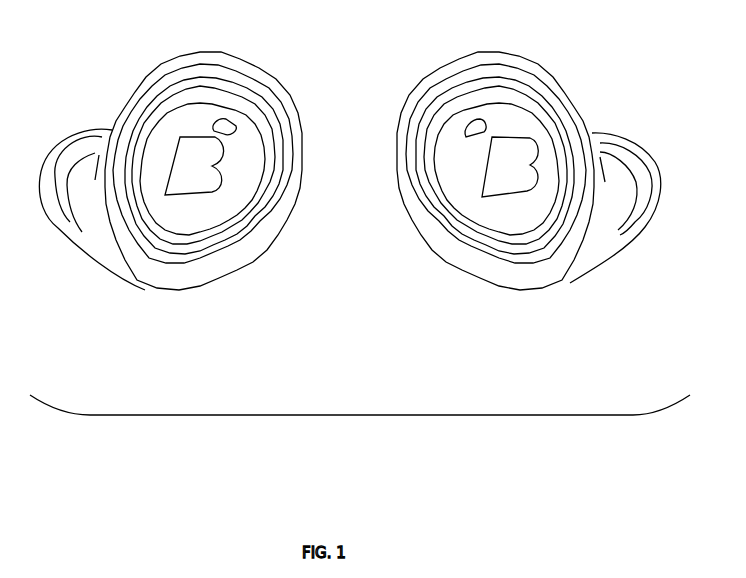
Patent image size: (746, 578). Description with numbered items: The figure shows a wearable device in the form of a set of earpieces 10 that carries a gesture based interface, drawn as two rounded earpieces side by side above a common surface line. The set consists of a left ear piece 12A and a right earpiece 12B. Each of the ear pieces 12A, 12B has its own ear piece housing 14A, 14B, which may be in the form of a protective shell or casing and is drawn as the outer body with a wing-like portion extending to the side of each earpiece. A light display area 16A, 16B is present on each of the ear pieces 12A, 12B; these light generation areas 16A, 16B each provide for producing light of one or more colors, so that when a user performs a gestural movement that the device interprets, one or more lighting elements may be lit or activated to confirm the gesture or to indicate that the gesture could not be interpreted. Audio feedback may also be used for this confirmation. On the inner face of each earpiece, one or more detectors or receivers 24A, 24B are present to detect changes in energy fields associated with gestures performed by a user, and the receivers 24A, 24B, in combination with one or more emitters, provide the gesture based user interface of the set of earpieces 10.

The set of earpieces 10 is at (343, 418).
The left ear piece 12A is at (196, 197).
The right earpiece 12B is at (529, 194).
The ear piece housing 14A is at (226, 268).
The ear piece housing 14B is at (560, 290).
The light display area 16A is at (270, 127).
The light display area 16B is at (537, 97).
The detector or receiver 24A is at (158, 210).
The detector or receiver 24B is at (495, 212).